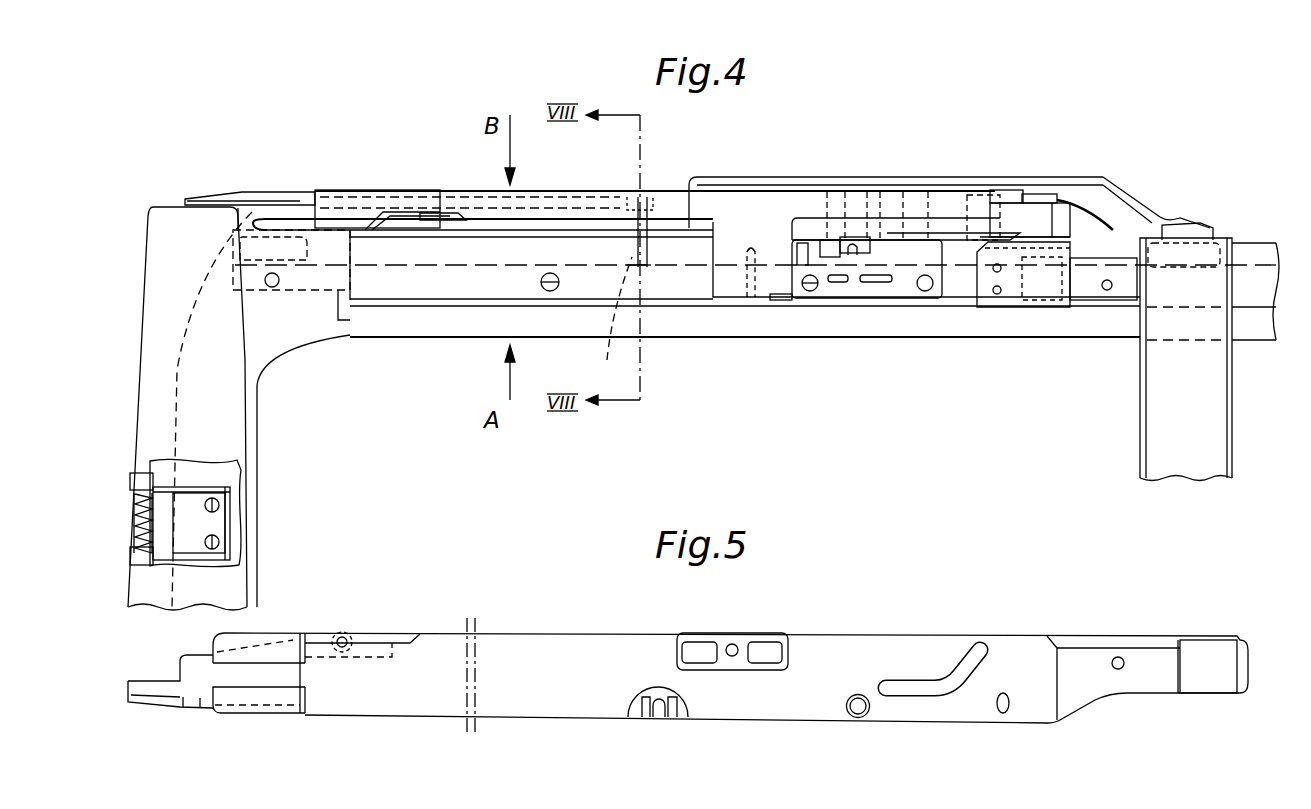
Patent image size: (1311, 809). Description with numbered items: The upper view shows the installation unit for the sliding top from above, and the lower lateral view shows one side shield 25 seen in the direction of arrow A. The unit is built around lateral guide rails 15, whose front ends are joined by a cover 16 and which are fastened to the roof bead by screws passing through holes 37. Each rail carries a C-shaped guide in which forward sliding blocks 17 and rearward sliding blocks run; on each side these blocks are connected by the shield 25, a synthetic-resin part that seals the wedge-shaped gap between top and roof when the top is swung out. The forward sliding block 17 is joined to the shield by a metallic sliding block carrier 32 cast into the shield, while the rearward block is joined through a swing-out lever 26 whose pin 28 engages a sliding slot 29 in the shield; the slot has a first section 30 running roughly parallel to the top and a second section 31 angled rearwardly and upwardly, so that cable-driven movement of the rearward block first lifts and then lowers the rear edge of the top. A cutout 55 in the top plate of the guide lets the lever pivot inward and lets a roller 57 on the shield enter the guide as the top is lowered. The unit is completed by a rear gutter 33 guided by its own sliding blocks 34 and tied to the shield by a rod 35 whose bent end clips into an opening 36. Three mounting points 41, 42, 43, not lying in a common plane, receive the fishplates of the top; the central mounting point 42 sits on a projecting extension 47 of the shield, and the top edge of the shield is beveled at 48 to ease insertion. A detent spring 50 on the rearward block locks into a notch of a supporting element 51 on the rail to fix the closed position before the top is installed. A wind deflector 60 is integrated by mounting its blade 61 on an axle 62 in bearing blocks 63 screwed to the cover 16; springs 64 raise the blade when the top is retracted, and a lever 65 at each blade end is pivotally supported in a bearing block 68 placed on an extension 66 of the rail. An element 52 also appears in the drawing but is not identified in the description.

In FIG. 4, the guide rail 15 is at (884, 335).
In FIG. 4, the cover 16 is at (250, 408).
In FIG. 4, the forward sliding block 17 is at (251, 205).
In FIG. 4, the shield 25 is at (755, 205).
In FIG. 5, the shield 25 is at (561, 650).
In FIG. 4, the swing-out lever 26 is at (940, 228).
In FIG. 4, the pin 28 is at (870, 200).
In FIG. 4, the sliding slot 29 is at (904, 202).
In FIG. 5, the sliding slot 29 is at (953, 658).
In FIG. 5, the first section of sliding slot 30 is at (909, 680).
In FIG. 5, the second section of sliding slot 31 is at (992, 664).
In FIG. 5, the sliding block carrier 32 is at (200, 710).
In FIG. 4, the rear gutter 33 is at (1155, 408).
In FIG. 4, the sliding block 34 is at (1216, 224).
In FIG. 4, the rod 35 is at (1076, 178).
In FIG. 5, the opening 36 is at (659, 713).
In FIG. 4, the hole 37 is at (273, 287).
In FIG. 4, the mounting point 41 is at (416, 191).
In FIG. 5, the mounting point 41 is at (343, 637).
In FIG. 4, the central mounting point 42 is at (748, 300).
In FIG. 5, the central mounting point 42 is at (732, 644).
In FIG. 4, the mounting point 43 is at (1021, 194).
In FIG. 5, the mounting point 43 is at (1119, 657).
In FIG. 4, the projecting extension 47 is at (712, 300).
In FIG. 4, the bevel 48 is at (441, 199).
In FIG. 5, the bevel 48 is at (399, 633).
In FIG. 4, the spring 50 is at (1018, 305).
In FIG. 4, the supporting element 51 is at (1088, 300).
In FIG. 4, the housing 52 is at (996, 300).
In FIG. 4, the cutout 55 is at (817, 244).
In FIG. 4, the roller 57 is at (846, 240).
In FIG. 5, the roller 57 is at (857, 718).
In FIG. 4, the wind deflector 60 is at (268, 382).
In FIG. 4, the blade 61 is at (232, 441).
In FIG. 4, the axle 62 is at (152, 478).
In FIG. 4, the bearing block 63 is at (236, 500).
In FIG. 4, the spring 64 is at (156, 531).
In FIG. 4, the lever 65 is at (284, 200).
In FIG. 4, the extension 66 is at (608, 321).
In FIG. 4, the bearing block 68 is at (642, 191).